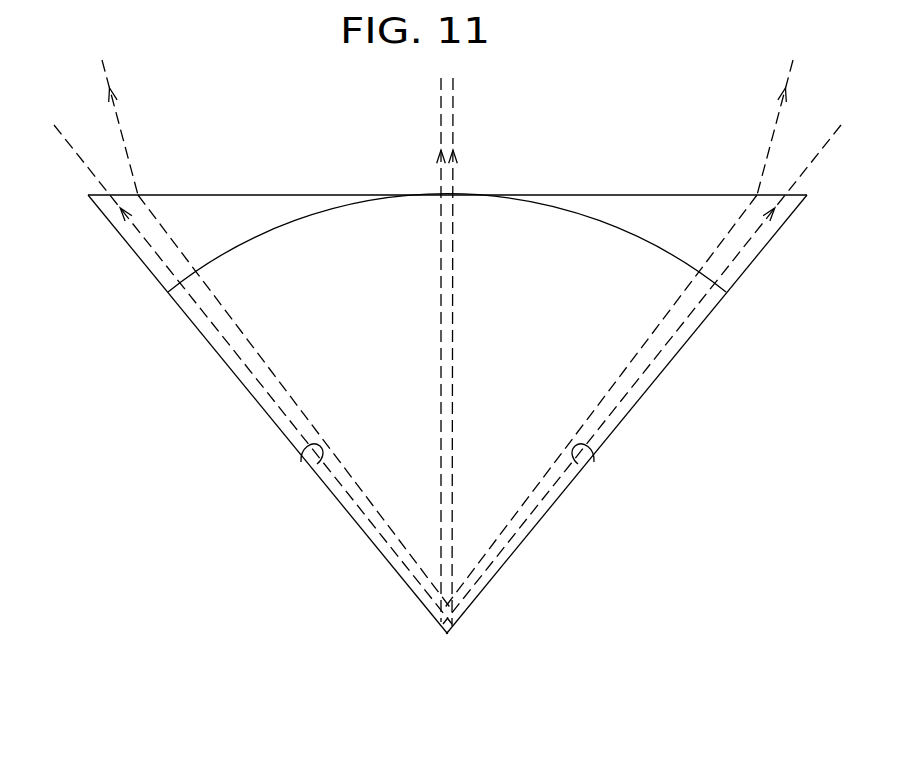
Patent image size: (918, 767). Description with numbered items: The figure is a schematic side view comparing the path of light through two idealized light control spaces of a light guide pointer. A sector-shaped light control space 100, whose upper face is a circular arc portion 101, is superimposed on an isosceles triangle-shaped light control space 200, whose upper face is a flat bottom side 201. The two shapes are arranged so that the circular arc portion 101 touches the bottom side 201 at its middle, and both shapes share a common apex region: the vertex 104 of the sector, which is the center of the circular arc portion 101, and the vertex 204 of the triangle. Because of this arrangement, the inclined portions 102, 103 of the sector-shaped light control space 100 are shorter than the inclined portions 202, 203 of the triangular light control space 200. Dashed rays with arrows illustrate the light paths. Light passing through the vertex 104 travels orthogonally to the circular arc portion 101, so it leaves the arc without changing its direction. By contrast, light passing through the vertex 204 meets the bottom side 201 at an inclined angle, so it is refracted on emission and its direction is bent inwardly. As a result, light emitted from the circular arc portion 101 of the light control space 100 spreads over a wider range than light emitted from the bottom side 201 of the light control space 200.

The light control space 100 is at (655, 248).
The circular arc portion 101 is at (241, 248).
The inclined portion 102 is at (314, 462).
The inclined portion 103 is at (582, 462).
The vertex 104 is at (447, 636).
The light control space 200 is at (718, 195).
The bottom side 201 is at (180, 195).
The inclined portion 202 is at (131, 256).
The inclined portion 203 is at (763, 256).
The vertex 204 is at (449, 636).